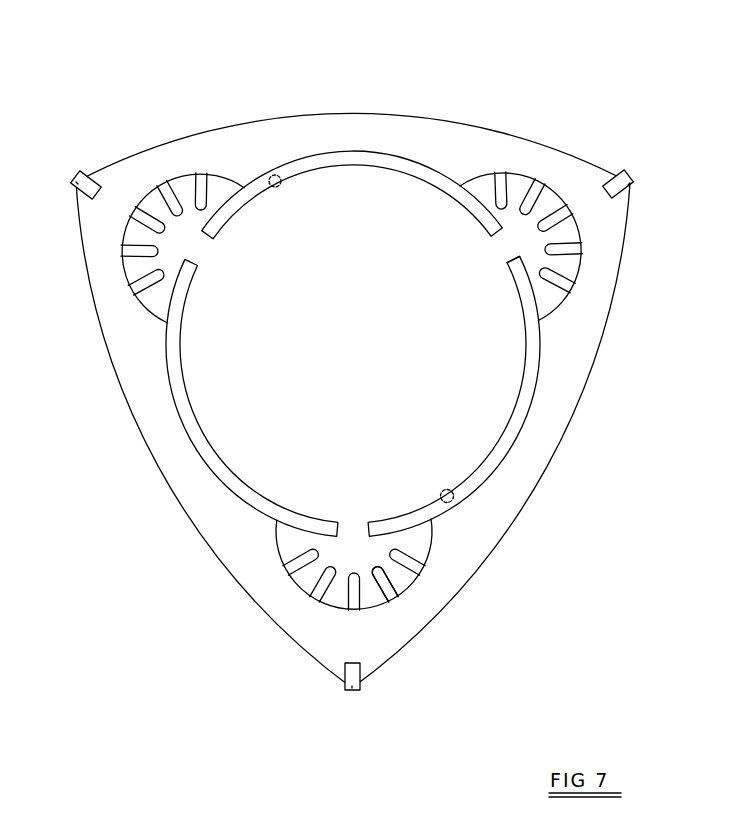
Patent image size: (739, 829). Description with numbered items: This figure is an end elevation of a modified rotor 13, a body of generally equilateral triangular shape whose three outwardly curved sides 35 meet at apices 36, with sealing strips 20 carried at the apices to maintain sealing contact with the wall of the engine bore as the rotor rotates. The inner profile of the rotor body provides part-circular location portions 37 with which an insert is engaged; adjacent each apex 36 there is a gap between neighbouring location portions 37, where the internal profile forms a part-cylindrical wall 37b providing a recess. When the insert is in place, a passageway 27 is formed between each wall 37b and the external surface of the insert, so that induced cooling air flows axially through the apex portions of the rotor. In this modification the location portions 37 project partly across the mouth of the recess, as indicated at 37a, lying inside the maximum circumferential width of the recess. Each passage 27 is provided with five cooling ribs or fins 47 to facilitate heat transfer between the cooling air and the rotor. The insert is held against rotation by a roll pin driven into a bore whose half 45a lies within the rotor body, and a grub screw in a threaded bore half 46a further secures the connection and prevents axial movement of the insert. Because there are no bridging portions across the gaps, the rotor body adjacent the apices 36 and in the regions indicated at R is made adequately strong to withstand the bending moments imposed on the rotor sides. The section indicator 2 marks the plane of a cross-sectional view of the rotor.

The section line of FIG. 2 is at (350, 88).
The rotor 13 is at (647, 247).
The sealing strips 20 is at (92, 184).
The passageways 27 is at (351, 391).
The outwardly curved sides 35 is at (312, 111).
The apices 36 is at (70, 173).
The location portions 37 is at (375, 177).
The projecting location portion 37a is at (517, 268).
The part-cylindrical wall 37b is at (152, 200).
The bore half 45a is at (440, 494).
The threaded bore half 46a is at (277, 188).
The cooling ribs or fins 47 is at (383, 587).
The regions R is at (245, 158).